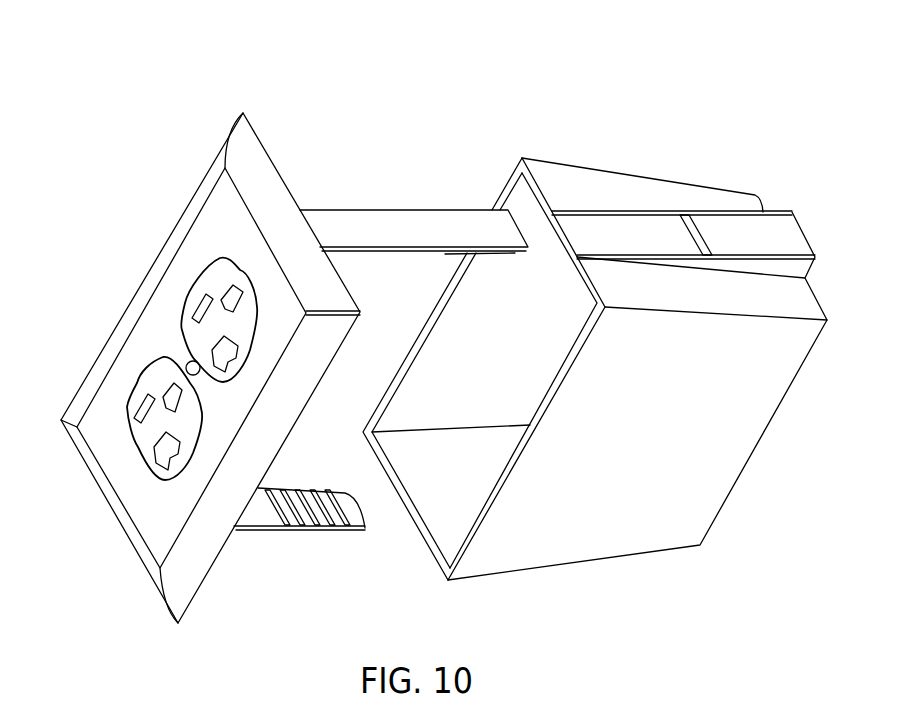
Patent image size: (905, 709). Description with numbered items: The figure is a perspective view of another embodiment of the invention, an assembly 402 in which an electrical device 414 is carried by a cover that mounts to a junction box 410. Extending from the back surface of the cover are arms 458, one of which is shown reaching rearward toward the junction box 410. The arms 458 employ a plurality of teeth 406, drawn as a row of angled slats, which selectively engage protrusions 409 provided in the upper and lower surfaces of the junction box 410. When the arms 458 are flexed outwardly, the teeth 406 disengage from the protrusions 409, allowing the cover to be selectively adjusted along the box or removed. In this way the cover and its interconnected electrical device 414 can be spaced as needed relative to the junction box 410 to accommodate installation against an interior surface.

The receptacle assembly 402 is at (357, 117).
The duplex electrical outlet 414 is at (202, 292).
The teeth 406 is at (315, 525).
The arms 458 is at (412, 228).
The junction box 410 is at (705, 454).
The protrusions 409 is at (702, 237).